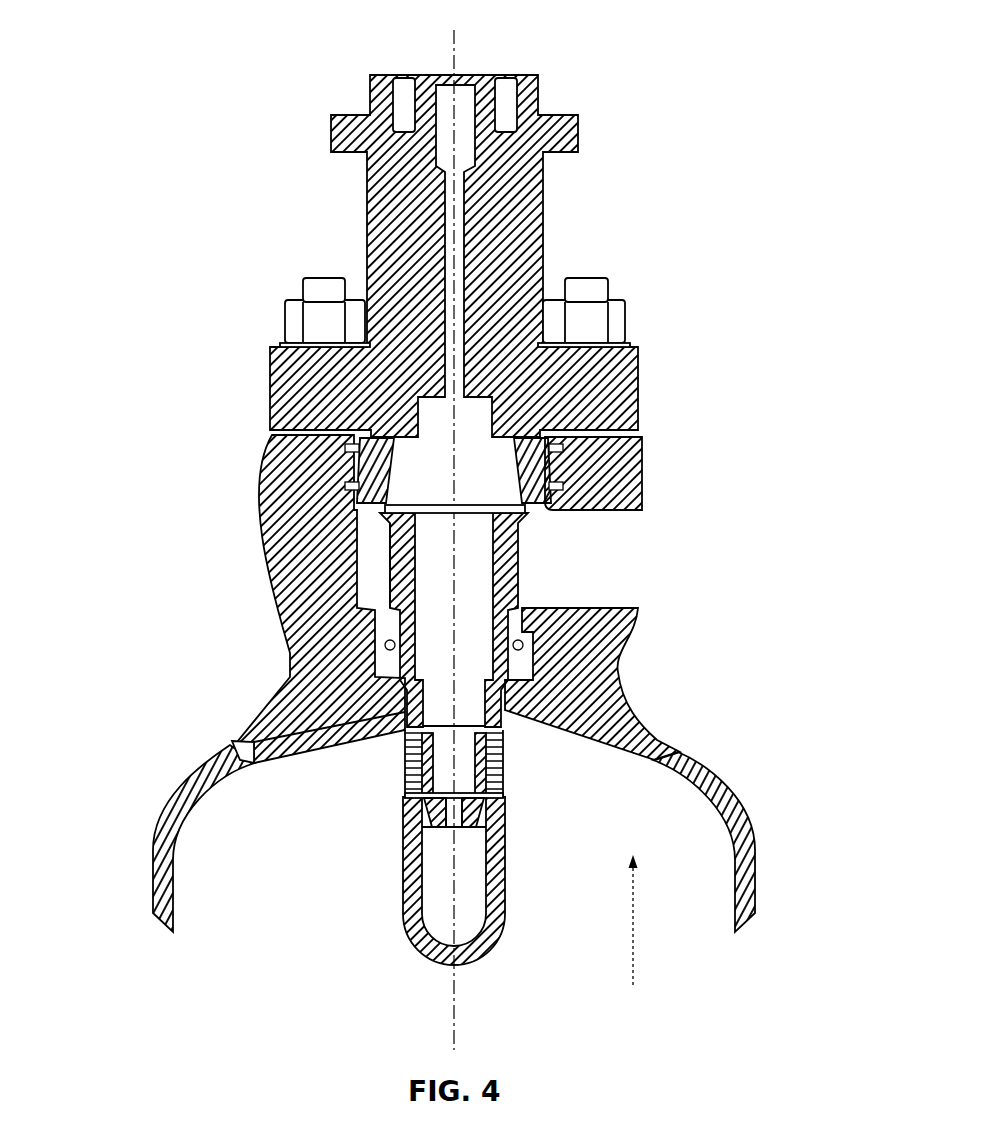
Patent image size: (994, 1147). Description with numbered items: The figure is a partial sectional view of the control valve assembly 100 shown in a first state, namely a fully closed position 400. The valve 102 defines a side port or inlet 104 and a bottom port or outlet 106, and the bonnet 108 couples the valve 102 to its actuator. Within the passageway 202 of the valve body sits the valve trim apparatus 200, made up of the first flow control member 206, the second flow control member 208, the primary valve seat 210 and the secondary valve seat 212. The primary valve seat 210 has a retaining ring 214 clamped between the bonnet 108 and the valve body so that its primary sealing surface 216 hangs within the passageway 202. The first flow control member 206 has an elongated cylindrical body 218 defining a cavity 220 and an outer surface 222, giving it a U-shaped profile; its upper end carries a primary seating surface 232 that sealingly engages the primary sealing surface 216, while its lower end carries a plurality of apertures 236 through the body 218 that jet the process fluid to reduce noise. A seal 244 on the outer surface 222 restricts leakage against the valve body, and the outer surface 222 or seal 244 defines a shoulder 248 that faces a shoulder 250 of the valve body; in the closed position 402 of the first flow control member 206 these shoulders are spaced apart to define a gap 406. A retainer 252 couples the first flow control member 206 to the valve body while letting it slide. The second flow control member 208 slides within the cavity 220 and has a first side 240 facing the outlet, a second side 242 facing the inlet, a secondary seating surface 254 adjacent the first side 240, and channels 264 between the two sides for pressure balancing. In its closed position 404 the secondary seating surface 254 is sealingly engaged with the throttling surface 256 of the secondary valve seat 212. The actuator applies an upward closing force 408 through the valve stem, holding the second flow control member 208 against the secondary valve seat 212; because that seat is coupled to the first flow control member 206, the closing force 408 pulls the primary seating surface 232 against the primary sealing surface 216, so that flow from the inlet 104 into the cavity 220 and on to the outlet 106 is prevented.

The control valve assembly 100 is at (731, 48).
The fully closed position 400 is at (139, 304).
The bonnet 108 is at (368, 240).
The cavity 220 is at (437, 512).
The retaining ring 214 is at (355, 465).
The primary sealing surface 216 is at (390, 507).
The primary seating surface 232 is at (390, 521).
The body 218 is at (392, 531).
The first flow control member 206 is at (400, 540).
The seal 244 is at (385, 645).
The gap 406 is at (383, 668).
The shoulder 250 is at (405, 708).
The secondary valve seat 212 is at (231, 744).
The outer surface 222 is at (405, 752).
The passageway 202 is at (245, 825).
The valve 102 is at (156, 905).
The outlet 106 is at (271, 906).
The closed position 404 is at (396, 846).
The second side 242 is at (446, 828).
The channels 264 is at (477, 829).
The first side 240 is at (424, 720).
The inlet 104 is at (634, 607).
The retainer 252 is at (518, 628).
The shoulder 248 is at (522, 667).
The throttling surface 256 is at (570, 717).
The valve trim apparatus 200 is at (665, 765).
The secondary seating surface 254 is at (492, 741).
The second flow control member 208 is at (493, 771).
The apertures 236 is at (493, 798).
The closing force 408 is at (634, 920).
The primary valve seat 210 is at (552, 467).
The closed position 402 is at (588, 549).